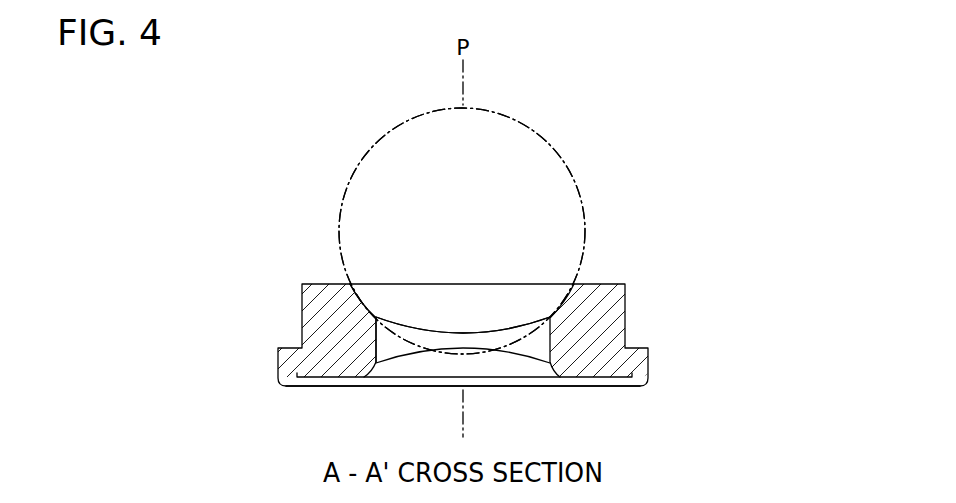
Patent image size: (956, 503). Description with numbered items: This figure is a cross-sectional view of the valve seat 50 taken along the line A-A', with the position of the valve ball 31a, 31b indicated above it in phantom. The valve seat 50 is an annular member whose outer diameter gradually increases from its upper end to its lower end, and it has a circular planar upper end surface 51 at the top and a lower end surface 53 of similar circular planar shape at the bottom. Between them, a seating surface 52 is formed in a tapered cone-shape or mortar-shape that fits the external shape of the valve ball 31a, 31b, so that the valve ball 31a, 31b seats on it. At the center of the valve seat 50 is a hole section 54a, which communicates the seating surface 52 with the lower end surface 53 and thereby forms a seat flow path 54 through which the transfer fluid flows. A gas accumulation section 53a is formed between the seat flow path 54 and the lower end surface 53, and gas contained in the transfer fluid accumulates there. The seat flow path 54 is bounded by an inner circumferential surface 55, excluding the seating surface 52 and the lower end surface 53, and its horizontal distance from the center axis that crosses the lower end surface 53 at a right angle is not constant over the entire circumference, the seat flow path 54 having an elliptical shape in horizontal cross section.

The valve ball 31a is at (552, 146).
The valve ball 31b is at (462, 231).
The valve seat 50 is at (488, 341).
The upper end surface 51 is at (607, 284).
The seating surface 52 is at (373, 316).
The lower end surface 53 is at (590, 377).
The gas accumulation section 53a is at (423, 368).
The seat flow path 54 is at (525, 344).
The hole section 54a is at (500, 284).
The inner circumferential surface 55 is at (393, 342).